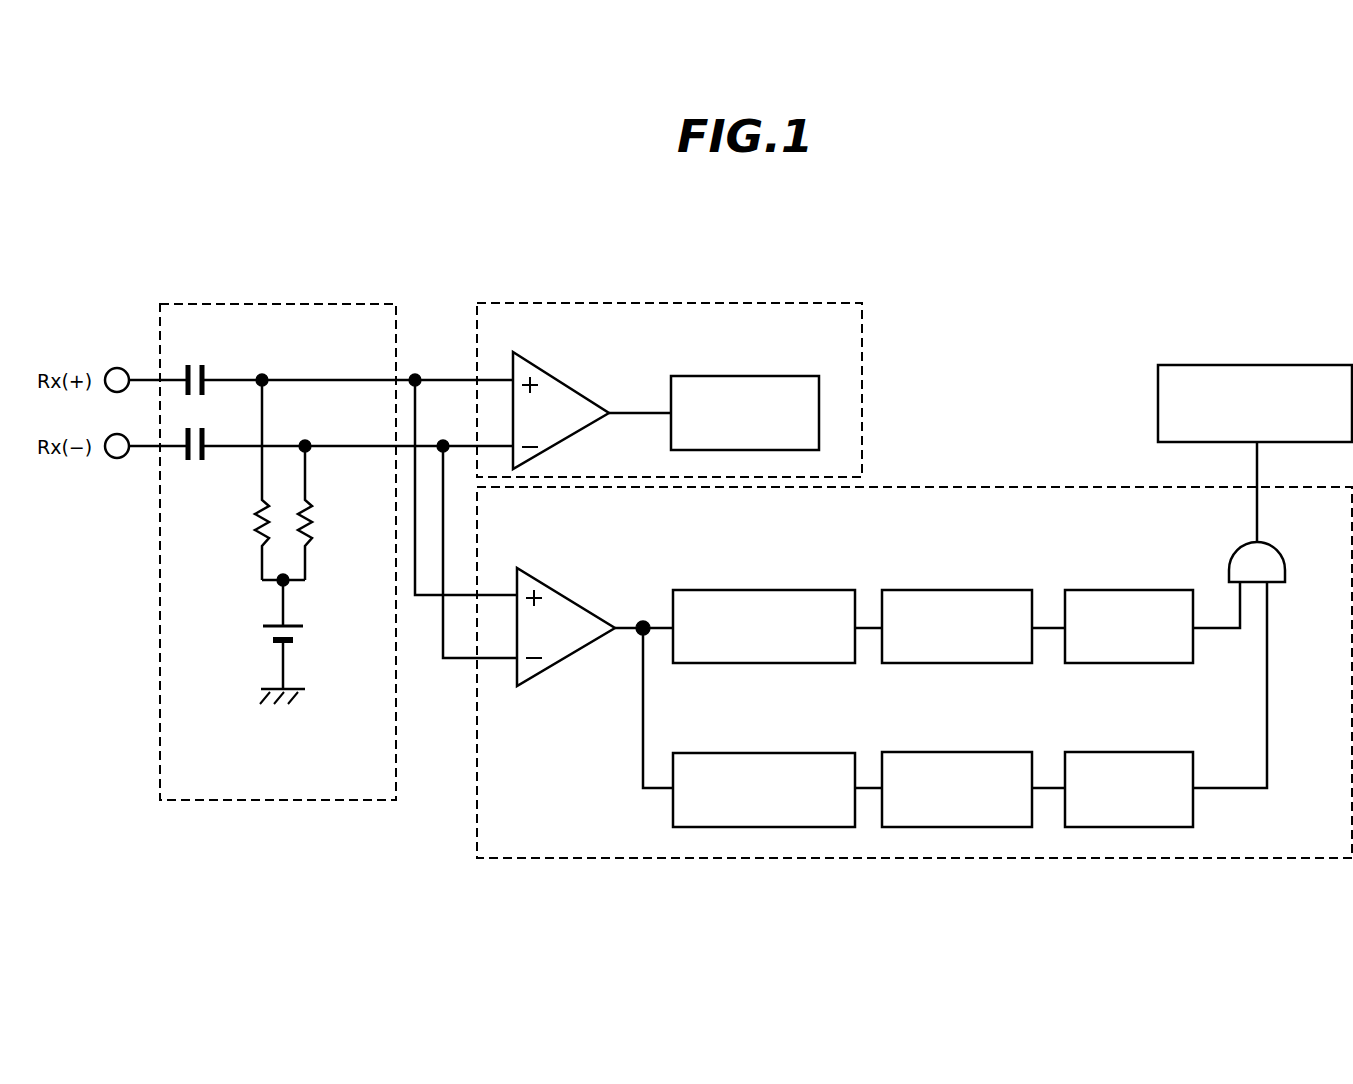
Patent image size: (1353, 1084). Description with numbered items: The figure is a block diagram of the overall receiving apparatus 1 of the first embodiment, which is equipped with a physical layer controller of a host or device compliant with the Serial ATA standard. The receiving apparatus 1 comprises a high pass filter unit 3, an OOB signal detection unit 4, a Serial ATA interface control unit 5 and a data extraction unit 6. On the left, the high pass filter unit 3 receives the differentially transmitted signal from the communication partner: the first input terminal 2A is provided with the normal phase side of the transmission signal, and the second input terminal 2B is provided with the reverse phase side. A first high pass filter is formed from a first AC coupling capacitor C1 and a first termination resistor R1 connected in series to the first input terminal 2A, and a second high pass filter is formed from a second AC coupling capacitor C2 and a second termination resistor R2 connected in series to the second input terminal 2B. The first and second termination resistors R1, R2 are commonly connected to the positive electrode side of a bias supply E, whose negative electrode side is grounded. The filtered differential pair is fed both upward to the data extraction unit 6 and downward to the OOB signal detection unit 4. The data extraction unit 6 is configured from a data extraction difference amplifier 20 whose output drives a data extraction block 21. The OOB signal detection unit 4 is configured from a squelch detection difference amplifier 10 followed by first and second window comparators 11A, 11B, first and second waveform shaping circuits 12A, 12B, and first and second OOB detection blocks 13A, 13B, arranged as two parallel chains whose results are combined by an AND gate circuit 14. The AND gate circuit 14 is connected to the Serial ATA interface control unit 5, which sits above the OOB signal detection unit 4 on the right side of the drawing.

The receiving apparatus 1 is at (928, 312).
The first input terminal 2A is at (116, 368).
The second input terminal 2B is at (118, 458).
The high pass filter unit 3 is at (283, 304).
The OOB signal detection unit 4 is at (1067, 487).
The Serial ATA interface control unit 5 is at (1272, 365).
The data extraction unit 6 is at (725, 303).
The squelch detection difference amplifier 10 is at (572, 600).
The first window comparator 11A is at (782, 590).
The second window comparator 11B is at (782, 753).
The first waveform shaping circuit 12A is at (972, 590).
The second waveform shaping circuit 12B is at (972, 752).
The first OOB detection block 13A is at (1138, 590).
The second OOB detection block 13B is at (1138, 752).
The AND gate circuit 14 is at (1281, 550).
The data extraction difference amplifier 20 is at (570, 385).
The data extraction block 21 is at (756, 376).
The first AC coupling capacitor C1 is at (204, 370).
The second AC coupling capacitor C2 is at (204, 436).
The first termination resistor R1 is at (254, 526).
The second termination resistor R2 is at (314, 518).
The bias supply E is at (262, 639).